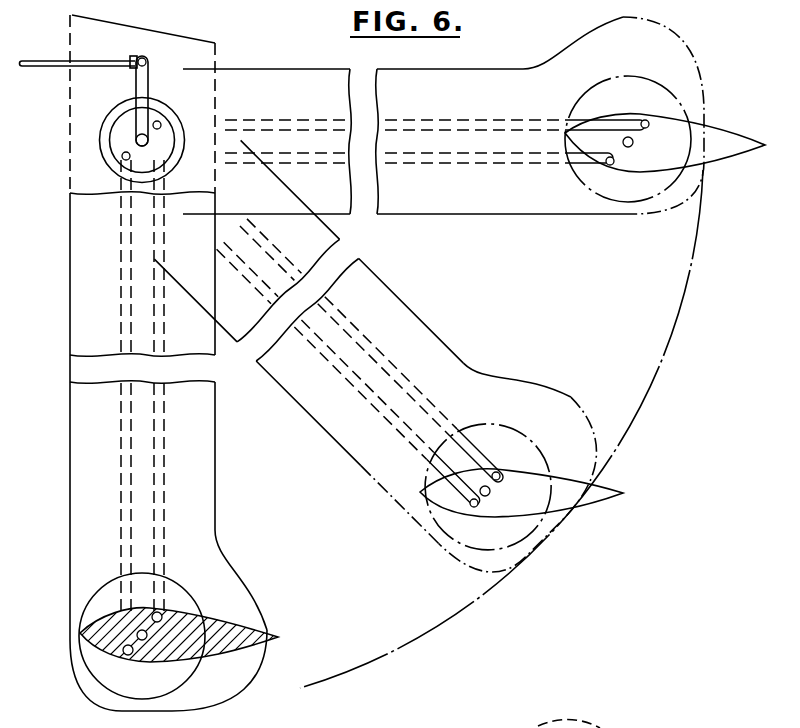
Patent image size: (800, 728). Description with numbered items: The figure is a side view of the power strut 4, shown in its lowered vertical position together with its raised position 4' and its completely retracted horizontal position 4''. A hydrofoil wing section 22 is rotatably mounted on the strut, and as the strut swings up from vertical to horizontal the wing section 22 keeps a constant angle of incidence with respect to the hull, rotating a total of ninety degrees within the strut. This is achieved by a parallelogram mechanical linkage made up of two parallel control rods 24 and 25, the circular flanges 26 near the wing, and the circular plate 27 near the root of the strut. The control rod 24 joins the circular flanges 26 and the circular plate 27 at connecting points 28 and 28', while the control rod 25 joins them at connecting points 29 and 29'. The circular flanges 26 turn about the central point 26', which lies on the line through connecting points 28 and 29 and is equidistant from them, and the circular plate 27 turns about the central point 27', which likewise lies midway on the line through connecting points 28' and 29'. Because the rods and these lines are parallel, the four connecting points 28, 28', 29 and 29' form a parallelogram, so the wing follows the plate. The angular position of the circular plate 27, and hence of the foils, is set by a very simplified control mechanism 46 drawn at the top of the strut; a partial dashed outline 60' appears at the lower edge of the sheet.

The power strut 4 is at (168, 363).
The raised position of strut 4' is at (383, 349).
The completely retracted position of strut 4'' is at (474, 139).
The hydrofoil wing section 22 is at (126, 669).
The control rod 24 is at (122, 424).
The control rod 25 is at (162, 289).
The circular flanges 26 is at (177, 608).
The central point 26' is at (116, 679).
The circular plate 27 is at (111, 140).
The central point 27' is at (171, 164).
The connecting point 28 is at (82, 642).
The connecting point 28' is at (81, 162).
The connecting point 29 is at (193, 648).
The connecting point 29' is at (169, 99).
The control mechanism 46 is at (148, 62).
The adjacent structure outline 60' is at (593, 723).